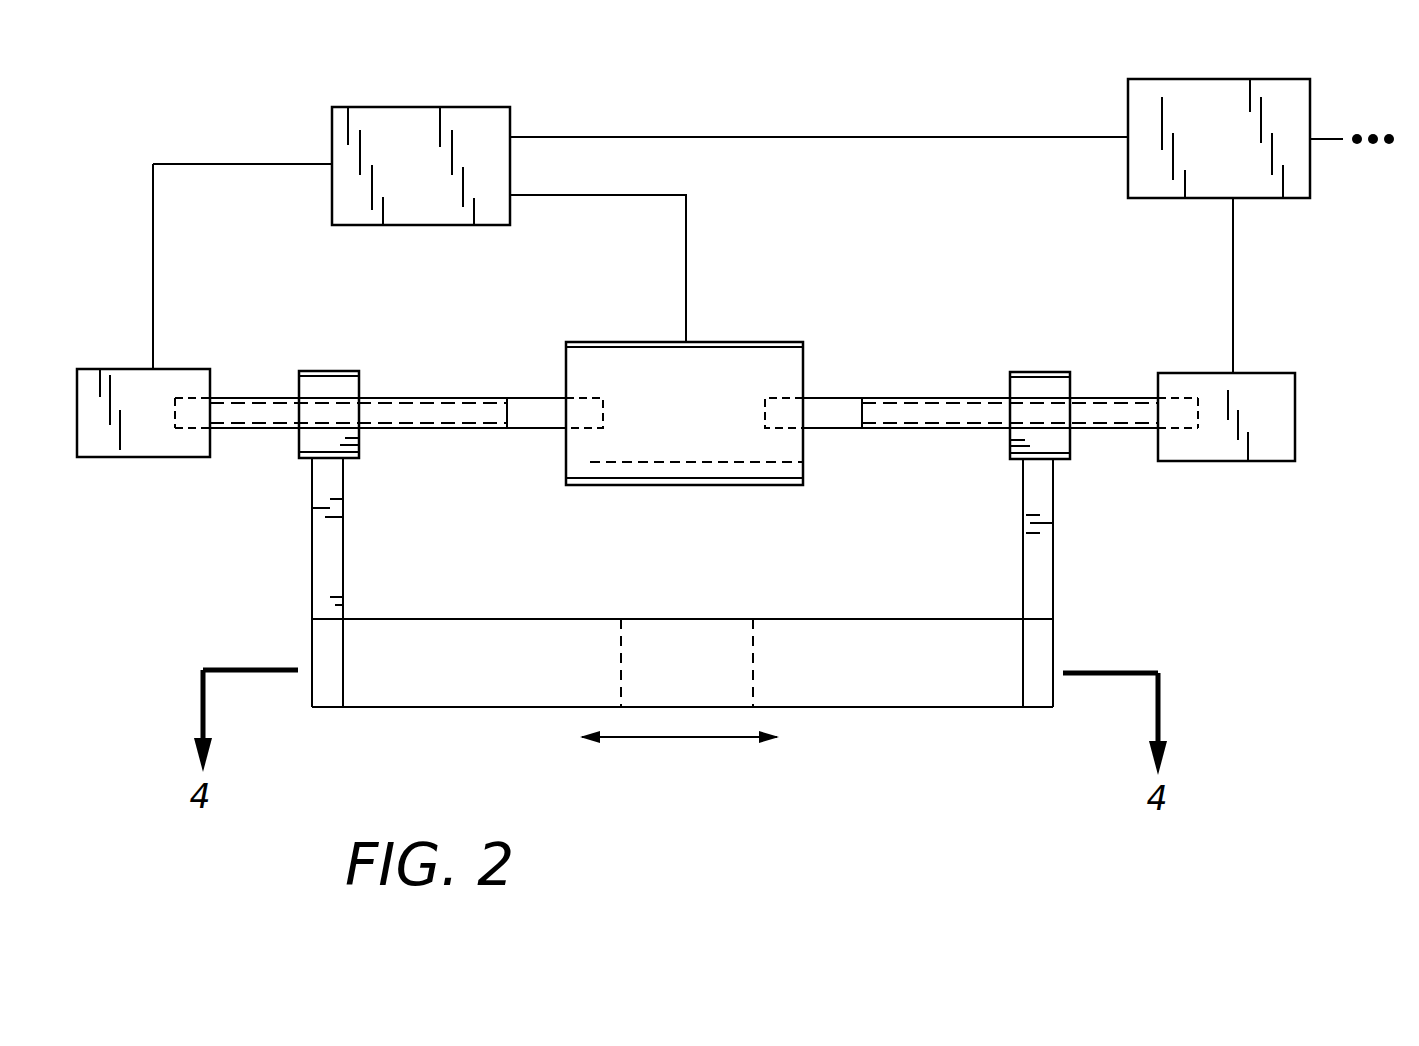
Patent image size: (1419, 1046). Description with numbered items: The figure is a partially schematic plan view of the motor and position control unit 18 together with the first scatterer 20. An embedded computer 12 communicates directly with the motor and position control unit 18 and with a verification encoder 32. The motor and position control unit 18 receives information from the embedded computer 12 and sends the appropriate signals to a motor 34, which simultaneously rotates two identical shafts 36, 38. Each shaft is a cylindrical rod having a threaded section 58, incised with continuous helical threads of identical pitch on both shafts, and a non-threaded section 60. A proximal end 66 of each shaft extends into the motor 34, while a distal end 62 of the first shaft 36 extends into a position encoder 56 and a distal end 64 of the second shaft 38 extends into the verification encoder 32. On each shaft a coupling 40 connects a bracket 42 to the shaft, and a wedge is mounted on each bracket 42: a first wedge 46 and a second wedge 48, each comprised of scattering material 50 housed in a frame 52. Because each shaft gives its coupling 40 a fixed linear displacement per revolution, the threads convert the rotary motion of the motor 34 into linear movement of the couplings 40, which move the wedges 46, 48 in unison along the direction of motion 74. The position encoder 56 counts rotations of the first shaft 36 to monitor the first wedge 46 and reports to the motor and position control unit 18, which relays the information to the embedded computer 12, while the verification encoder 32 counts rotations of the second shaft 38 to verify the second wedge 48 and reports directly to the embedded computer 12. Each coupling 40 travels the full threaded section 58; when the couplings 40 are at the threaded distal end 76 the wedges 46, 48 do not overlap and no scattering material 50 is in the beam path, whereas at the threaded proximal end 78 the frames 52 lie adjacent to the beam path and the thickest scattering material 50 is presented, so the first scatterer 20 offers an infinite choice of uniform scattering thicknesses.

The embedded computer 12 is at (1212, 79).
The motor and position control unit 18 is at (420, 107).
The first scatterer 20 is at (1192, 653).
The verification encoder 32 is at (1268, 373).
The motor 34 is at (720, 342).
The first shaft 36 is at (460, 464).
The second shaft 38 is at (904, 465).
The coupling 40 is at (322, 370).
The bracket 42 is at (323, 575).
The first wedge 46 is at (475, 688).
The second wedge 48 is at (890, 688).
The scattering material 50 is at (587, 640).
The frame 52 is at (318, 640).
The position encoder 56 is at (122, 368).
The threaded section 58 is at (404, 432).
The non-threaded section 60 is at (540, 432).
The distal end of first shaft 62 is at (172, 420).
The distal end of second shaft 64 is at (1198, 424).
The proximal end 66 is at (603, 424).
The direction of motion 74 is at (635, 740).
The threaded distal end 76 is at (228, 380).
The threaded proximal end 78 is at (512, 372).